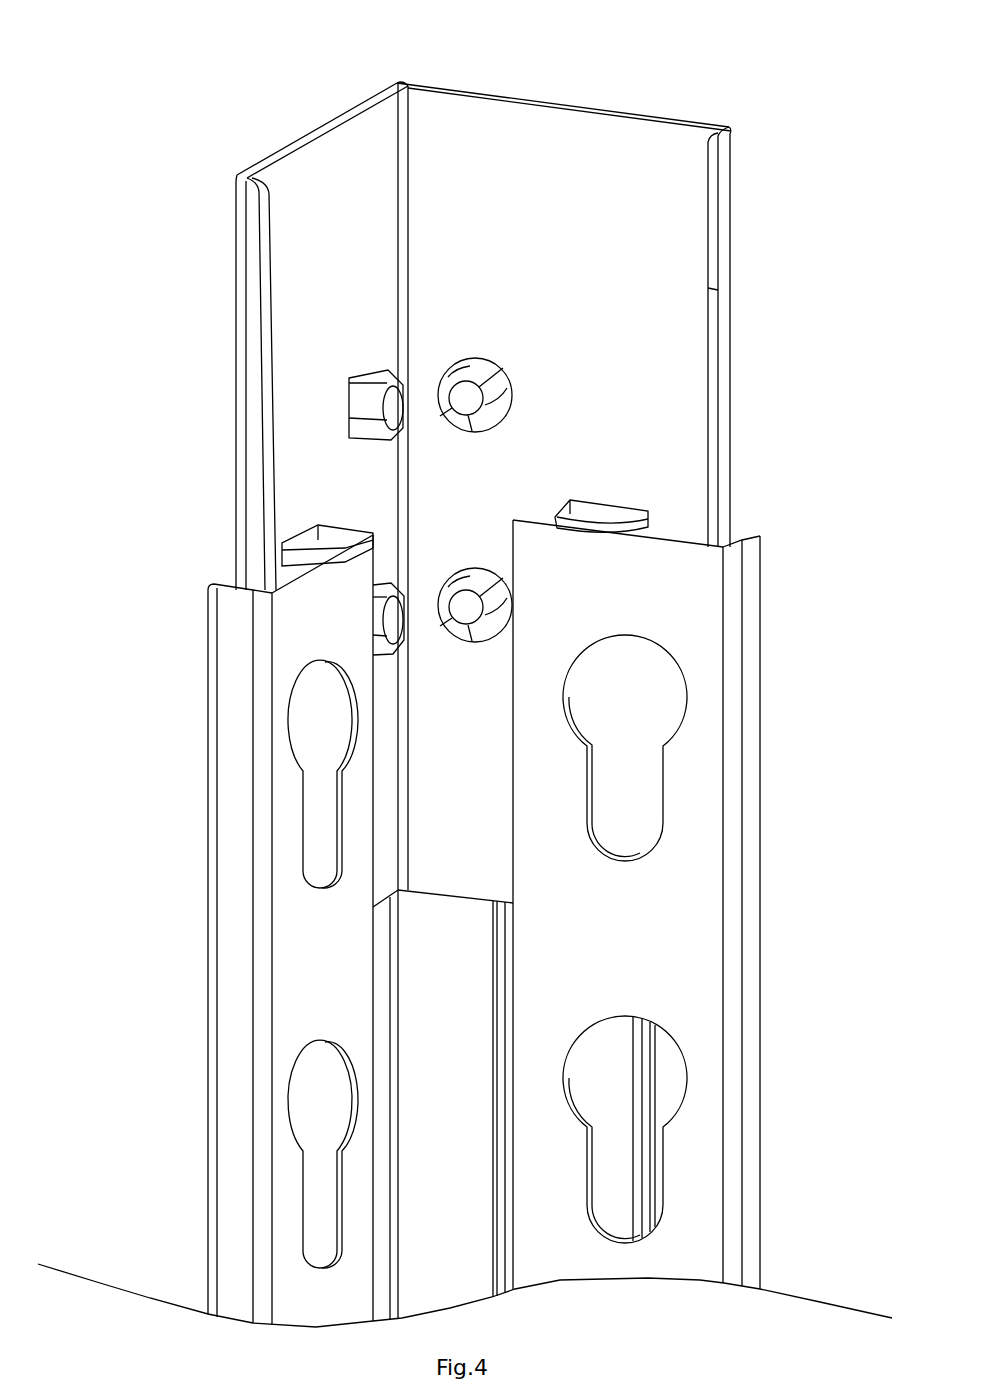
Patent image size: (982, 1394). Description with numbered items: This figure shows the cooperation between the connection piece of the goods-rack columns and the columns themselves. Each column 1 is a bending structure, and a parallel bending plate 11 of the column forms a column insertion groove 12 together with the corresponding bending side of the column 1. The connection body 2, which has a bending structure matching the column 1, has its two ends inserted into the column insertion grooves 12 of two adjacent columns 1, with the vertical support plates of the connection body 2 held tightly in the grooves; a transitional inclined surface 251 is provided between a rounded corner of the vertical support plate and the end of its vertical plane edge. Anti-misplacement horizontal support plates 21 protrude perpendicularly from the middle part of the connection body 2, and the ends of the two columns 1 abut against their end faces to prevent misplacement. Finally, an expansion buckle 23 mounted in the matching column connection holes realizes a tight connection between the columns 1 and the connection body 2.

The column 1 is at (430, 1145).
The parallel bending plate 11 is at (332, 630).
The column insertion groove 12 is at (227, 575).
The connection body 2 is at (548, 127).
The anti-misplacement horizontal support plate 21 is at (610, 508).
The expansion buckle 23 is at (507, 383).
The transitional inclined surface 251 is at (267, 272).